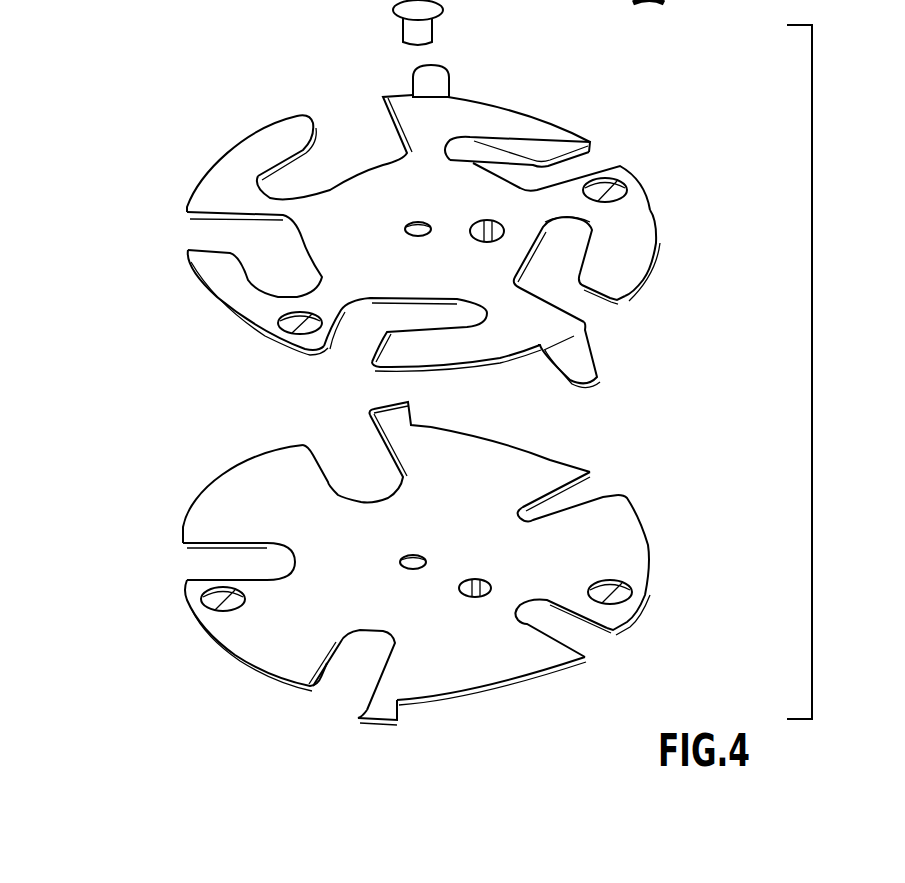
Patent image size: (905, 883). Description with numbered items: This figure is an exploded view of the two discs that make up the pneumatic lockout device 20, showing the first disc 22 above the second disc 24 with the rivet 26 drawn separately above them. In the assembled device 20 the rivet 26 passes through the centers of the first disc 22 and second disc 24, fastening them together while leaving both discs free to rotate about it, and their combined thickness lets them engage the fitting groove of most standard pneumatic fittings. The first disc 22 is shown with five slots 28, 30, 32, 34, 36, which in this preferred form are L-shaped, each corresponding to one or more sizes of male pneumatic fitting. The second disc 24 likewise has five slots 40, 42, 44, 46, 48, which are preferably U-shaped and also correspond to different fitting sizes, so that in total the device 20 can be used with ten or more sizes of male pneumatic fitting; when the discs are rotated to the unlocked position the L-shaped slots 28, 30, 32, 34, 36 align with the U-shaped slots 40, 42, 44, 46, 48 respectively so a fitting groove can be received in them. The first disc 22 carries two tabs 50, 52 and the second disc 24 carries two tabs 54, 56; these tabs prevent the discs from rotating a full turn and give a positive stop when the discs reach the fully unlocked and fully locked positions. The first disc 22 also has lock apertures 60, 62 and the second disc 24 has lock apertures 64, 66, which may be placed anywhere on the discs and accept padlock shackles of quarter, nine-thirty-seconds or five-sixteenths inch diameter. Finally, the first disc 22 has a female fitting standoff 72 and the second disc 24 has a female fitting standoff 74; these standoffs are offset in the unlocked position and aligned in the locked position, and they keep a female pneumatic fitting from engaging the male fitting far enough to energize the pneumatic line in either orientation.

The pneumatic lockout device 20 is at (152, 393).
The first disc 22 is at (247, 153).
The second disc 24 is at (250, 497).
The rivet 26 is at (403, 8).
The slot 28 is at (550, 272).
The slot 30 is at (540, 180).
The slot 32 is at (370, 153).
The slot 34 is at (260, 250).
The slot 36 is at (380, 322).
The slot 40 is at (550, 625).
The slot 42 is at (555, 508).
The slot 44 is at (365, 478).
The slot 46 is at (260, 563).
The slot 48 is at (360, 660).
The tab 50 is at (437, 77).
The tab 52 is at (590, 368).
The tab 54 is at (397, 410).
The tab 56 is at (380, 713).
The lock aperture 60 is at (625, 181).
The lock aperture 62 is at (227, 313).
The lock aperture 64 is at (628, 585).
The lock aperture 66 is at (190, 598).
The female fitting standoff 72 is at (490, 217).
The female fitting standoff 74 is at (480, 600).